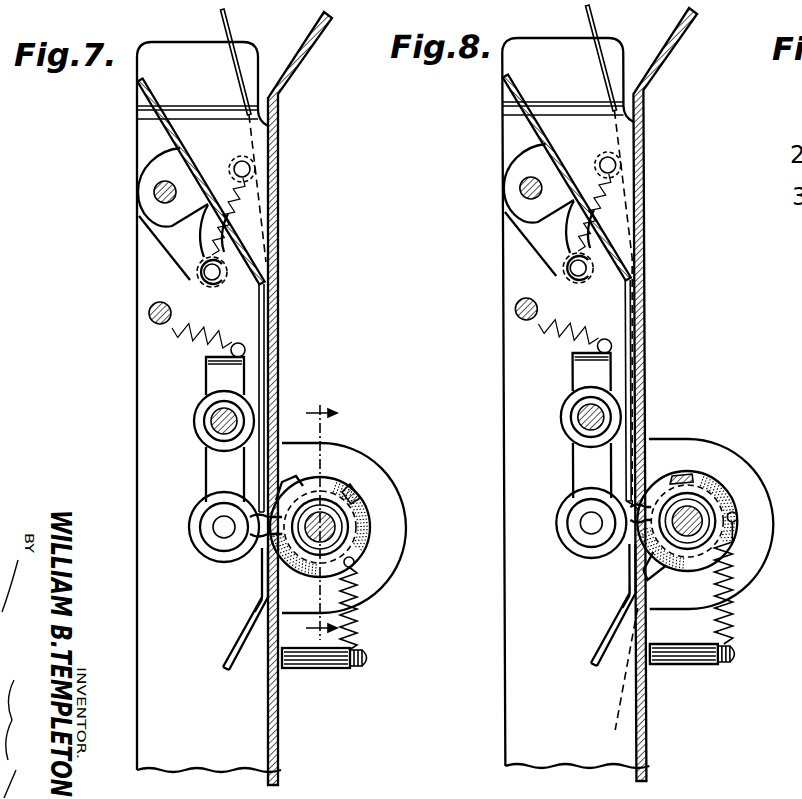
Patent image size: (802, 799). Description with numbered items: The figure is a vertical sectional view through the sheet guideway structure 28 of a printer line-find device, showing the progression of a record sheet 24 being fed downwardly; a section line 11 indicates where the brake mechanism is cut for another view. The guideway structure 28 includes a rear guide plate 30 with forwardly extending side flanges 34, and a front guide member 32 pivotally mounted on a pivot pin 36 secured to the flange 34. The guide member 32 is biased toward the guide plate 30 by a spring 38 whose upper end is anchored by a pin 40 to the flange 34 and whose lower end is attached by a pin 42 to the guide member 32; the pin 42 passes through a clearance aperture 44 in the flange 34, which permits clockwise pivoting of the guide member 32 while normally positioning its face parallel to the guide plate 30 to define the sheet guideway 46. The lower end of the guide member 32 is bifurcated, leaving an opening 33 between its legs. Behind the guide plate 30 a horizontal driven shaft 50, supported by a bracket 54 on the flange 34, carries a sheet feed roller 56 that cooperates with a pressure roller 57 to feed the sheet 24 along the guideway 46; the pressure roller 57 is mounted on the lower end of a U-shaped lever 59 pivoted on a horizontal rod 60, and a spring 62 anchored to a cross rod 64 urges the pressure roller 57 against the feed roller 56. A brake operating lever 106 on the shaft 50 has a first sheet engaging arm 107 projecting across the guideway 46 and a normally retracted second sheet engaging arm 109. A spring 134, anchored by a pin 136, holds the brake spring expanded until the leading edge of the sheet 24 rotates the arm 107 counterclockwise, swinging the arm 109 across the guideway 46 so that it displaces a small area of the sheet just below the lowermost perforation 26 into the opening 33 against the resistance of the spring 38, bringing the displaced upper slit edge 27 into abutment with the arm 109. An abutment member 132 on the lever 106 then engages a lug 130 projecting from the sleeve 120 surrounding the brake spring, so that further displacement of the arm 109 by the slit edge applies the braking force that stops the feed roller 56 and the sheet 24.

In FIG. 7, the section line 11- 11 is at (309, 524).
In FIG. 7, the record sheet 24 is at (226, 48).
In FIG. 8, the record sheet 24 is at (583, 367).
In FIG. 8, the slit-like perforations 26 is at (610, 497).
In FIG. 8, the displaced portion of the card 27 is at (663, 481).
In FIG. 7, the sheet guideway structure 28 is at (134, 146).
In FIG. 8, the sheet guideway structure 28 is at (540, 403).
In FIG. 7, the rear guide plate 30 is at (280, 300).
In FIG. 8, the rear guide plate 30 is at (667, 394).
In FIG. 7, the guide member 32 is at (258, 376).
In FIG. 8, the guide member 32 is at (582, 390).
In FIG. 7, the opening between legs of guide member 33 is at (238, 611).
In FIG. 8, the opening between legs of guide member 33 is at (609, 602).
In FIG. 7, the side flanges 34 is at (137, 240).
In FIG. 8, the side flanges 34 is at (505, 210).
In FIG. 7, the pivot pin 36 is at (153, 192).
In FIG. 8, the pivot pin 36 is at (493, 192).
In FIG. 7, the spring 38 is at (258, 206).
In FIG. 8, the spring 38 is at (639, 212).
In FIG. 7, the pin 40 is at (250, 166).
In FIG. 8, the pin 40 is at (646, 156).
In FIG. 7, the pin 42 is at (213, 282).
In FIG. 8, the pin 42 is at (595, 260).
In FIG. 7, the clearance aperture 44 is at (193, 284).
In FIG. 8, the clearance aperture 44 is at (551, 273).
In FIG. 7, the sheet guideway 46 is at (268, 338).
In FIG. 8, the sheet guideway 46 is at (601, 205).
In FIG. 7, the driven shaft 50 is at (352, 540).
In FIG. 8, the driven shaft 50 is at (730, 521).
In FIG. 7, the bracket 54 is at (350, 454).
In FIG. 8, the bracket 54 is at (711, 500).
In FIG. 7, the sheet feed roller 56 is at (335, 527).
In FIG. 8, the sheet feed roller 56 is at (737, 507).
In FIG. 7, the pressure roller 57 is at (196, 512).
In FIG. 8, the pressure roller 57 is at (571, 521).
In FIG. 7, the U-shaped lever 59 is at (208, 460).
In FIG. 8, the U-shaped lever 59 is at (565, 425).
In FIG. 7, the horizontal rod 60 is at (212, 421).
In FIG. 8, the horizontal rod 60 is at (570, 417).
In FIG. 7, the spring 62 is at (173, 332).
In FIG. 8, the spring 62 is at (564, 346).
In FIG. 7, the cross rod 64 is at (149, 313).
In FIG. 8, the cross rod 64 is at (497, 314).
In FIG. 7, the brake operating lever 106 is at (311, 563).
In FIG. 8, the brake operating lever 106 is at (721, 553).
In FIG. 7, the first sheet engaging arm 107 is at (256, 562).
In FIG. 8, the first sheet engaging arm 107 is at (651, 605).
In FIG. 7, the second sheet engaging arm 109 is at (296, 490).
In FIG. 8, the second sheet engaging arm 109 is at (618, 576).
In FIG. 7, the sleeve 120 is at (375, 555).
In FIG. 8, the sleeve 120 is at (764, 495).
In FIG. 7, the lug 130 is at (358, 503).
In FIG. 8, the lug 130 is at (717, 499).
In FIG. 7, the abutment member 132 is at (349, 490).
In FIG. 8, the abutment member 132 is at (710, 448).
In FIG. 7, the spring 134 is at (358, 628).
In FIG. 8, the spring 134 is at (757, 590).
In FIG. 7, the pin 136 is at (332, 672).
In FIG. 8, the pin 136 is at (692, 680).